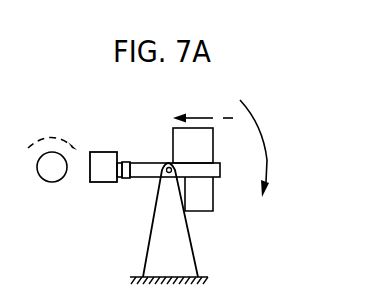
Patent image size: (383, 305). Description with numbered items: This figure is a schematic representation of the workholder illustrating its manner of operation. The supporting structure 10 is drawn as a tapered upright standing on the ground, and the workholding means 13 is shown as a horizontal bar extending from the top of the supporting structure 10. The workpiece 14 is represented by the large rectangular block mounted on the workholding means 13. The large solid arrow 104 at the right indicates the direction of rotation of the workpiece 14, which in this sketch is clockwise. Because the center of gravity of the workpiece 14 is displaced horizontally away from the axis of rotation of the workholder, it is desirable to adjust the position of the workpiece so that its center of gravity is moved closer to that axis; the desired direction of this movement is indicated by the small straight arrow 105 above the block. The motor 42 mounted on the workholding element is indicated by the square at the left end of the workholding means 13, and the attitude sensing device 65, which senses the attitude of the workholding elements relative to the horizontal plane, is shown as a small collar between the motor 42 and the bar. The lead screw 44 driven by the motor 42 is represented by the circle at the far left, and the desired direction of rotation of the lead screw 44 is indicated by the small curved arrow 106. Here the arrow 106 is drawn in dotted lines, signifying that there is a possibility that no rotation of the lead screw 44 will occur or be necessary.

The supporting structure 10 is at (180, 257).
The workholding means 13 is at (157, 167).
The workpiece 14 is at (205, 200).
The motor 42 is at (100, 162).
The lead screw 44 is at (52, 182).
The attitude sensing device 65 is at (125, 178).
The large solid arrow 104 is at (267, 158).
The small straight arrow 105 is at (202, 117).
The small curved arrow 106 is at (50, 130).